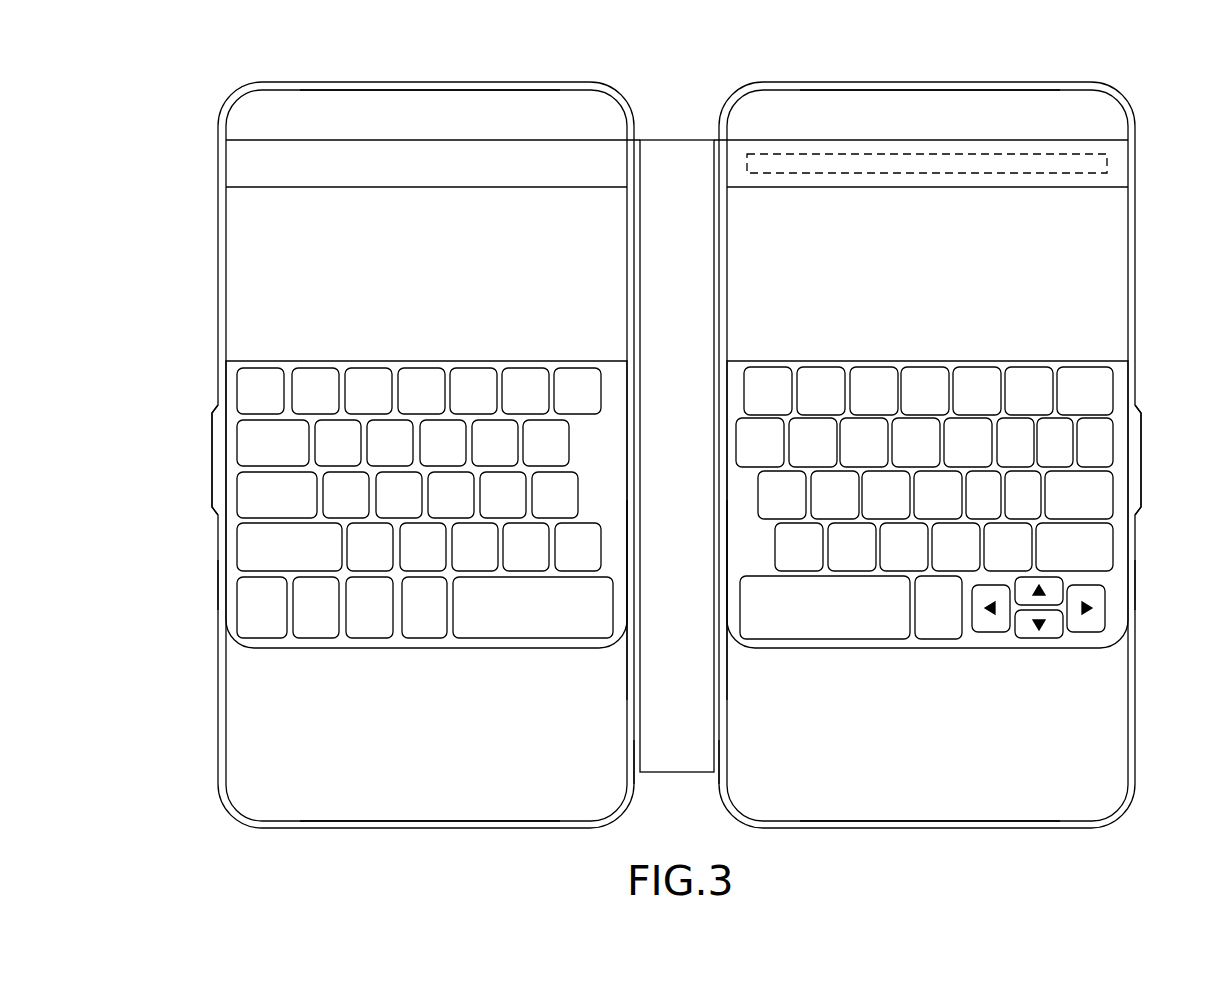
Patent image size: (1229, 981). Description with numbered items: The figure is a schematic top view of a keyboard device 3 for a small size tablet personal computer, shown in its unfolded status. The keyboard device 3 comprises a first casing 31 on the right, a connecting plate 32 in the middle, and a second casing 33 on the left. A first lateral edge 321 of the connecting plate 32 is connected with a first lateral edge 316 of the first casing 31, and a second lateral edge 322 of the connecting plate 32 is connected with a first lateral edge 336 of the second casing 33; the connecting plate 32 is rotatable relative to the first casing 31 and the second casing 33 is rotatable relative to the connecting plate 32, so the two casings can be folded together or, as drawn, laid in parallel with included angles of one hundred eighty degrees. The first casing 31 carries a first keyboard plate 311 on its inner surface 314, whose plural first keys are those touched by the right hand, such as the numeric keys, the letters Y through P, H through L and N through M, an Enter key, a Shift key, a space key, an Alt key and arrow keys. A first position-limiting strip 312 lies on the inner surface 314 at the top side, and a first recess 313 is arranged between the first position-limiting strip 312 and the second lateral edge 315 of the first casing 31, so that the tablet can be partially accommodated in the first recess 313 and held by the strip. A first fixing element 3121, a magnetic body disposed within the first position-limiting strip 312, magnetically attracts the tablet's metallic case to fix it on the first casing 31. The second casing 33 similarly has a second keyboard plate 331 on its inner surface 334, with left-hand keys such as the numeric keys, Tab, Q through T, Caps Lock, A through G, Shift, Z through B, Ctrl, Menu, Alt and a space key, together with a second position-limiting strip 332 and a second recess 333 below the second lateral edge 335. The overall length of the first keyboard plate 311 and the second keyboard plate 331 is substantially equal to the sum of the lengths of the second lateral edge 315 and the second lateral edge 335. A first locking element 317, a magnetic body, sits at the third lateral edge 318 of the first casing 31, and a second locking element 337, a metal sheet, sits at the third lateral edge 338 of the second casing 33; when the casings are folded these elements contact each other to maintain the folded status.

The keyboard device 3 is at (846, 58).
The first casing 31 is at (1107, 272).
The connecting plate 32 is at (682, 160).
The second casing 33 is at (241, 272).
The first keyboard plate 311 is at (1090, 375).
The first position-limiting strip 312 is at (1120, 170).
The first recess 313 is at (1095, 110).
The inner surface of the first casing 314 is at (1118, 738).
The second lateral edge of the first casing 315 is at (1000, 88).
The first lateral edge of the first casing 316 is at (722, 660).
The first locking element 317 is at (1140, 455).
The third lateral edge of the first casing 318 is at (1130, 585).
The first lateral edge of the connecting plate 321 is at (718, 760).
The second lateral edge of the connecting plate 322 is at (635, 760).
The second keyboard plate 331 is at (265, 375).
The second position-limiting strip 332 is at (232, 170).
The second recess 333 is at (262, 110).
The inner surface of the second casing 334 is at (237, 738).
The second lateral edge of the second casing 335 is at (480, 88).
The first lateral edge of the second casing 336 is at (630, 660).
The second locking element 337 is at (215, 455).
The third lateral edge of the second casing 338 is at (222, 585).
The first fixing element 3121 is at (975, 160).